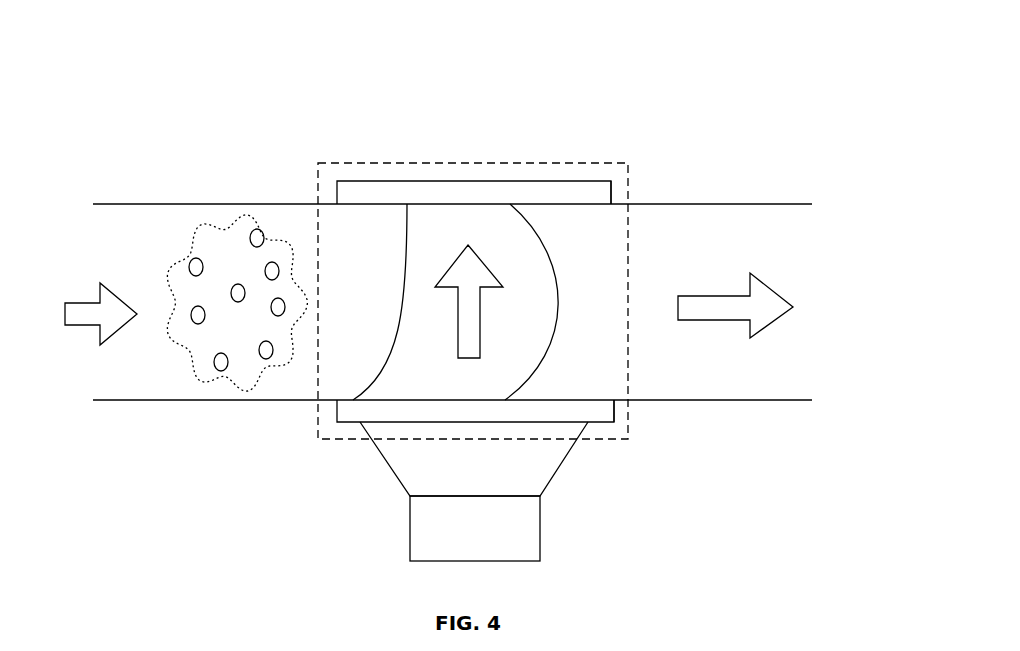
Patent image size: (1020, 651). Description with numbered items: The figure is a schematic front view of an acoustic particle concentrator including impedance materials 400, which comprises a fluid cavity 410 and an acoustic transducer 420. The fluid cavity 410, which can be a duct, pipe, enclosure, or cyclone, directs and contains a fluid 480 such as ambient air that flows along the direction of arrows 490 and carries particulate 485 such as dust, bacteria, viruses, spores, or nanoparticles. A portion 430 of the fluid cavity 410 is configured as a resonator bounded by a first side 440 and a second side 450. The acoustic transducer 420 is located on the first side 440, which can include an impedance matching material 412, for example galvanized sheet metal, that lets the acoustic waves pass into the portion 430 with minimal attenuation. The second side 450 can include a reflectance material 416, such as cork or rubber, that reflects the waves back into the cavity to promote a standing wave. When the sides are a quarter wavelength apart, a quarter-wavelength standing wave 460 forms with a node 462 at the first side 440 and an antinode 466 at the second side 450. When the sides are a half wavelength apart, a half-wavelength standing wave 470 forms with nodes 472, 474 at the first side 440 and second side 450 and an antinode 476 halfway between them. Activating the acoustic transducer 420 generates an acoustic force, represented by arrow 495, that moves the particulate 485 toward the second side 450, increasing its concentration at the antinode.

The acoustic particle concentrator including impedance materials 400 is at (612, 100).
The fluid cavity 410 is at (133, 204).
The impedance matching material 412 is at (614, 422).
The reflectance material 416 is at (611, 181).
The acoustic transducer 420 is at (410, 533).
The portion of the fluid cavity 430 is at (353, 162).
The first side 440 is at (400, 407).
The second side 450 is at (458, 192).
The quarter-wavelength standing wave 460 is at (402, 312).
The node 462 is at (353, 398).
The antinode 466 is at (405, 200).
The half-wavelength standing wave 470 is at (547, 245).
The node 472 is at (503, 402).
The node 474 is at (505, 200).
The antinode 476 is at (558, 313).
The fluid 480 is at (262, 217).
The particulate 485 is at (276, 316).
The arrows 490 is at (82, 325).
The arrow 495 is at (482, 330).